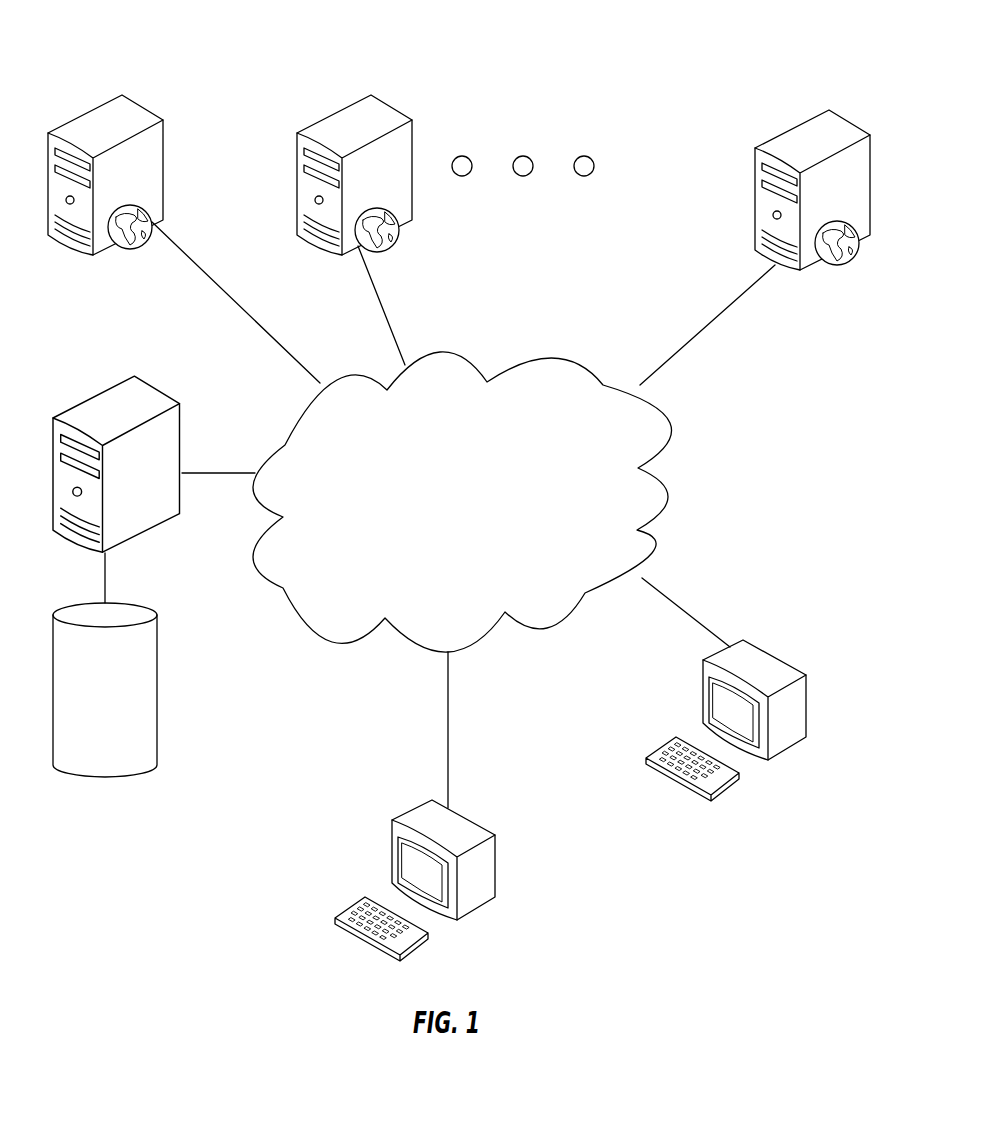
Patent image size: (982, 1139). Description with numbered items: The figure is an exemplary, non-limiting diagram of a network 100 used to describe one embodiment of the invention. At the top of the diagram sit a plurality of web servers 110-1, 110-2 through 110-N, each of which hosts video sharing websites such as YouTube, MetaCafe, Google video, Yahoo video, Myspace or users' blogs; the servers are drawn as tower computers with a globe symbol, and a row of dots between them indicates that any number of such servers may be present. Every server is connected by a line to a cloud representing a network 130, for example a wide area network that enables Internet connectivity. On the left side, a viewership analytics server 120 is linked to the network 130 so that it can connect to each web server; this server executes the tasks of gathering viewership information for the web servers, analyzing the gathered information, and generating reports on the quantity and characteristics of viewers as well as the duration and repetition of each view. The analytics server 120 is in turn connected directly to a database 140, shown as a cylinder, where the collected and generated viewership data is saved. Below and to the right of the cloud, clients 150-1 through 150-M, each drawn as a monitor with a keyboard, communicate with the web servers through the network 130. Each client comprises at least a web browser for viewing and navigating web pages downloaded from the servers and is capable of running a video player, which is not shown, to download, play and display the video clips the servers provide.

The network 100 is at (645, 53).
The web server 110-1 is at (140, 107).
The web server 110-2 is at (388, 107).
The web server 110-N is at (822, 117).
The viewership analytics server 120 is at (140, 377).
The network 130 is at (663, 473).
The database 140 is at (138, 603).
The client 150-1 is at (472, 825).
The client 150-M is at (775, 662).